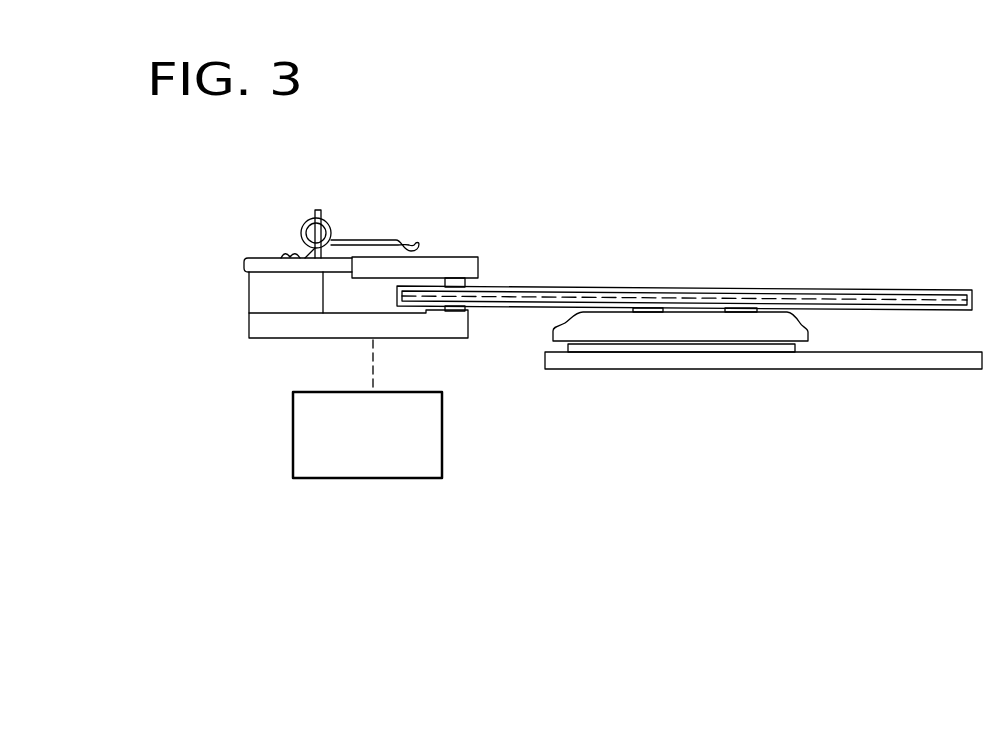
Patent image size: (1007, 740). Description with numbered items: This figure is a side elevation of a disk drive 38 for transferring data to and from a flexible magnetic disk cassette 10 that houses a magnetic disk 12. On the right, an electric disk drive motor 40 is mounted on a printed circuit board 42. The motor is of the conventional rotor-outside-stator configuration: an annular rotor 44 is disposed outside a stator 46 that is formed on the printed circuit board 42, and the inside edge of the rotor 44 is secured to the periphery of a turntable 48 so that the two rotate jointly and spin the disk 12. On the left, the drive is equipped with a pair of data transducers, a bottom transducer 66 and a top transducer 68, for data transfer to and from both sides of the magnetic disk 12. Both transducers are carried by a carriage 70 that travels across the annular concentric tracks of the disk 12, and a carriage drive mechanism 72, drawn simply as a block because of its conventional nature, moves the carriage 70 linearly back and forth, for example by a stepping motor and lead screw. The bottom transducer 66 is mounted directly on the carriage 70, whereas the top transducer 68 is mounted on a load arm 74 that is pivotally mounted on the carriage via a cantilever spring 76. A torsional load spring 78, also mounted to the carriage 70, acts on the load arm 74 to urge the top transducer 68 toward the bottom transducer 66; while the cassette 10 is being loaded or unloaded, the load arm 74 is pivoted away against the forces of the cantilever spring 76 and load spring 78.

The flexible magnetic disk cassette 10 is at (887, 270).
The magnetic disk 12 is at (757, 295).
The disk drive 38 is at (207, 213).
The electric disk drive motor 40 is at (855, 330).
The printed circuit board 42 is at (883, 372).
The rotor 44 is at (650, 330).
The stator 46 is at (723, 345).
The turntable 48 is at (663, 310).
The bottom transducer 66 is at (465, 308).
The top transducer 68 is at (465, 283).
The carriage 70 is at (413, 330).
The carriage drive mechanism 72 is at (442, 437).
The load arm 74 is at (445, 265).
The cantilever spring 76 is at (333, 272).
The torsional load spring 78 is at (376, 240).